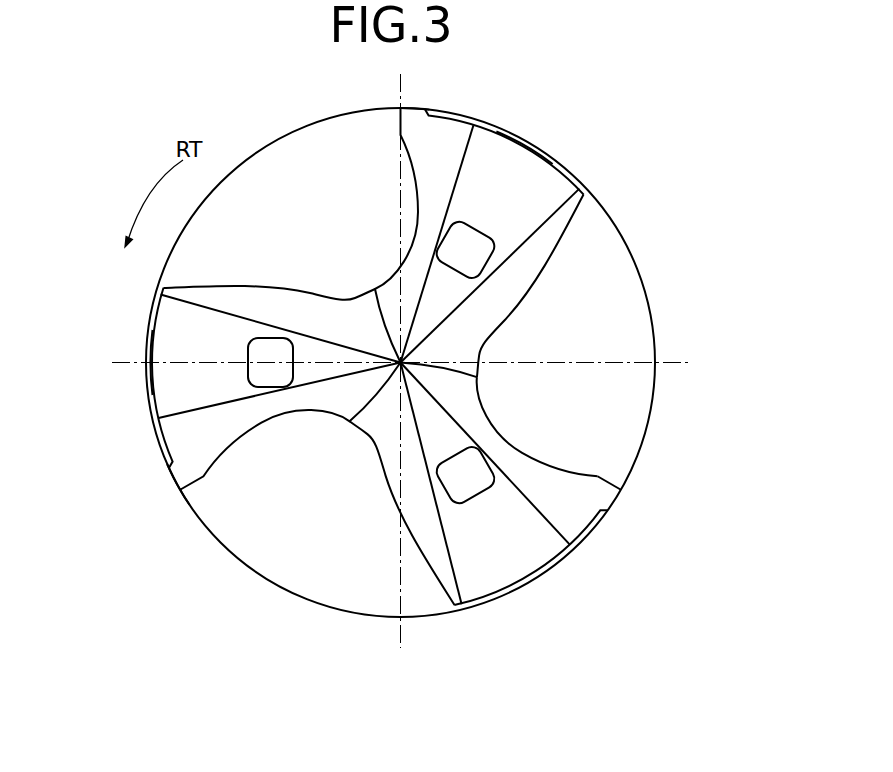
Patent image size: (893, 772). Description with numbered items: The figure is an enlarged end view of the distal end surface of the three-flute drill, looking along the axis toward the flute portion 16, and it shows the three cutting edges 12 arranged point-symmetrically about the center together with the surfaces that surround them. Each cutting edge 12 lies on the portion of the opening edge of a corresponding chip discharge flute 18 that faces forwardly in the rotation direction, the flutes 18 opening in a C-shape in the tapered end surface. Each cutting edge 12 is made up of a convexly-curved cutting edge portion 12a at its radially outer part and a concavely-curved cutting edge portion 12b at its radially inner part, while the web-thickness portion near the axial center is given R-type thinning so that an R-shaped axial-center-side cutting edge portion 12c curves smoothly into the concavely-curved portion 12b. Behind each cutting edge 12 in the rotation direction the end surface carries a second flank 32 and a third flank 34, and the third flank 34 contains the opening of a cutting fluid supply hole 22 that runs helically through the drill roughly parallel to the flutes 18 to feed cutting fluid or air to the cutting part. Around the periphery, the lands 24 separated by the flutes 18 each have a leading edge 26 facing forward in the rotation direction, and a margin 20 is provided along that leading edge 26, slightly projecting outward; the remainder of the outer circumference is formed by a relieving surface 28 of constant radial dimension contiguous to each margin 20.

The cutting edge 12 is at (242, 450).
The convexly-curved cutting edge portion 12a is at (610, 480).
The concavely-curved cutting edge portion 12b is at (513, 442).
The R-shaped axial-center-side cutting edge portion 12c is at (481, 368).
The flute portion 16 is at (677, 382).
The chip discharge flute 18 is at (295, 158).
The margin 20 is at (180, 478).
The cutting fluid supply hole 22 is at (264, 380).
The land 24 is at (149, 311).
The leading edge 26 is at (180, 498).
The relieving surface 28 is at (152, 388).
The second flank 32 is at (188, 447).
The third flank 34 is at (162, 342).